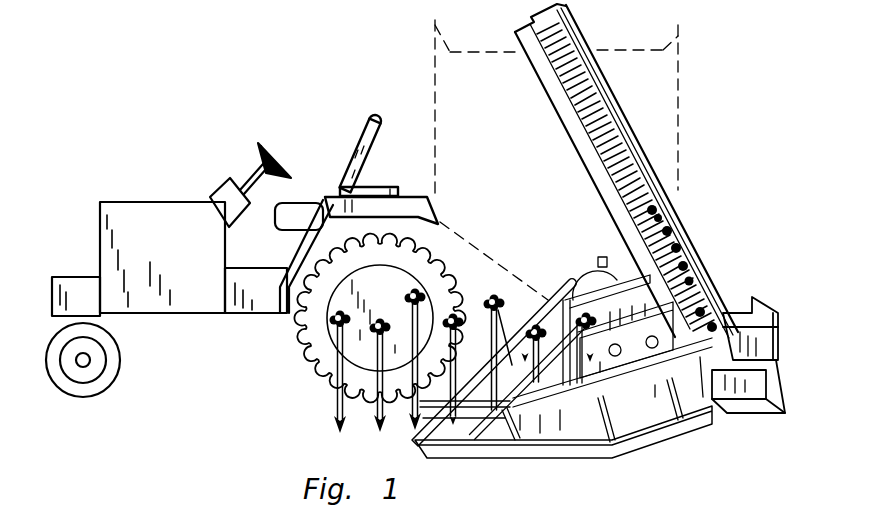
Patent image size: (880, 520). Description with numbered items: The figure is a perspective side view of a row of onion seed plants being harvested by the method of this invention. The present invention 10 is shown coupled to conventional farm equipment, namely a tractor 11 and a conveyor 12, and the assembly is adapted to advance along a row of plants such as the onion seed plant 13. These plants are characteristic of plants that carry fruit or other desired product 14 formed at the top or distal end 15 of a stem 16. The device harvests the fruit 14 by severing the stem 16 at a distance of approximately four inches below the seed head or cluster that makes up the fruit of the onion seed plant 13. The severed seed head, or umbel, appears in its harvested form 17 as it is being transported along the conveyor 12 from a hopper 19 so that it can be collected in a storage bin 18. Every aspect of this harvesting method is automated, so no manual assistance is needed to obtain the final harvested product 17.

The present invention 10 is at (678, 444).
The tractor 11 is at (437, 210).
The conveyor 12 is at (627, 121).
The onion seed plant 13 is at (323, 399).
The fruit 14 is at (421, 290).
The distal end 15 is at (455, 318).
The stem 16 is at (309, 362).
The harvested form 17 is at (681, 230).
The storage bin 18 is at (679, 38).
The hopper 19 is at (767, 343).